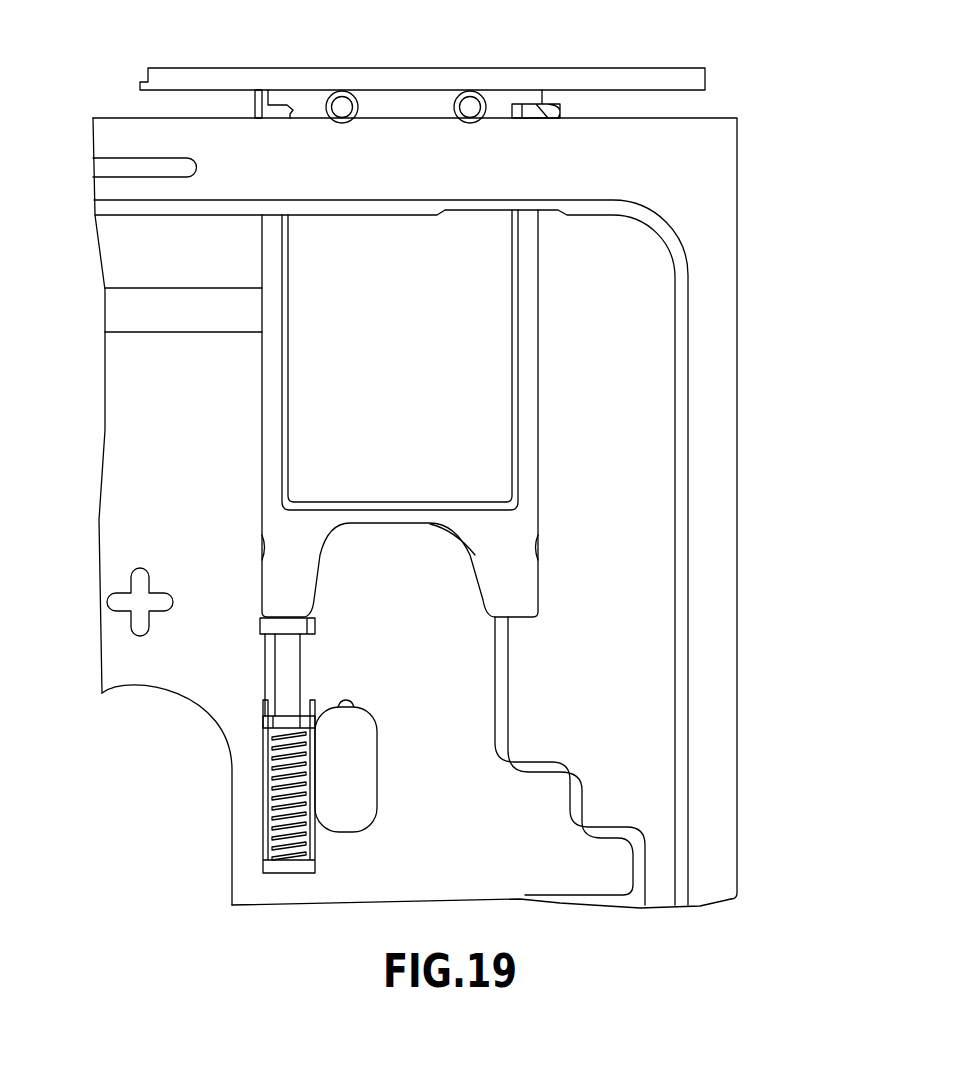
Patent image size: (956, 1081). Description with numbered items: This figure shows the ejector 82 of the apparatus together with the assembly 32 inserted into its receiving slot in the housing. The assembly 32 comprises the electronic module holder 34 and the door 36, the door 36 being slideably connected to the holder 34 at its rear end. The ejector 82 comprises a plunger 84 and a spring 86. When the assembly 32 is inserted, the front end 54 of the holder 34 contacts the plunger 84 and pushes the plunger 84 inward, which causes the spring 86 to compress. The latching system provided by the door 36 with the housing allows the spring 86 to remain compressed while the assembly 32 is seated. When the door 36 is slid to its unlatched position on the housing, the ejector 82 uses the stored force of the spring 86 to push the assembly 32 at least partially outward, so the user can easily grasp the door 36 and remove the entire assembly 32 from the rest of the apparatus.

The assembly 32 is at (428, 67).
The door 36 is at (566, 74).
The electronic module holder 34 is at (512, 380).
The front end 54 is at (290, 607).
The plunger 84 is at (283, 647).
The ejector 82 is at (282, 678).
The spring 86 is at (273, 792).